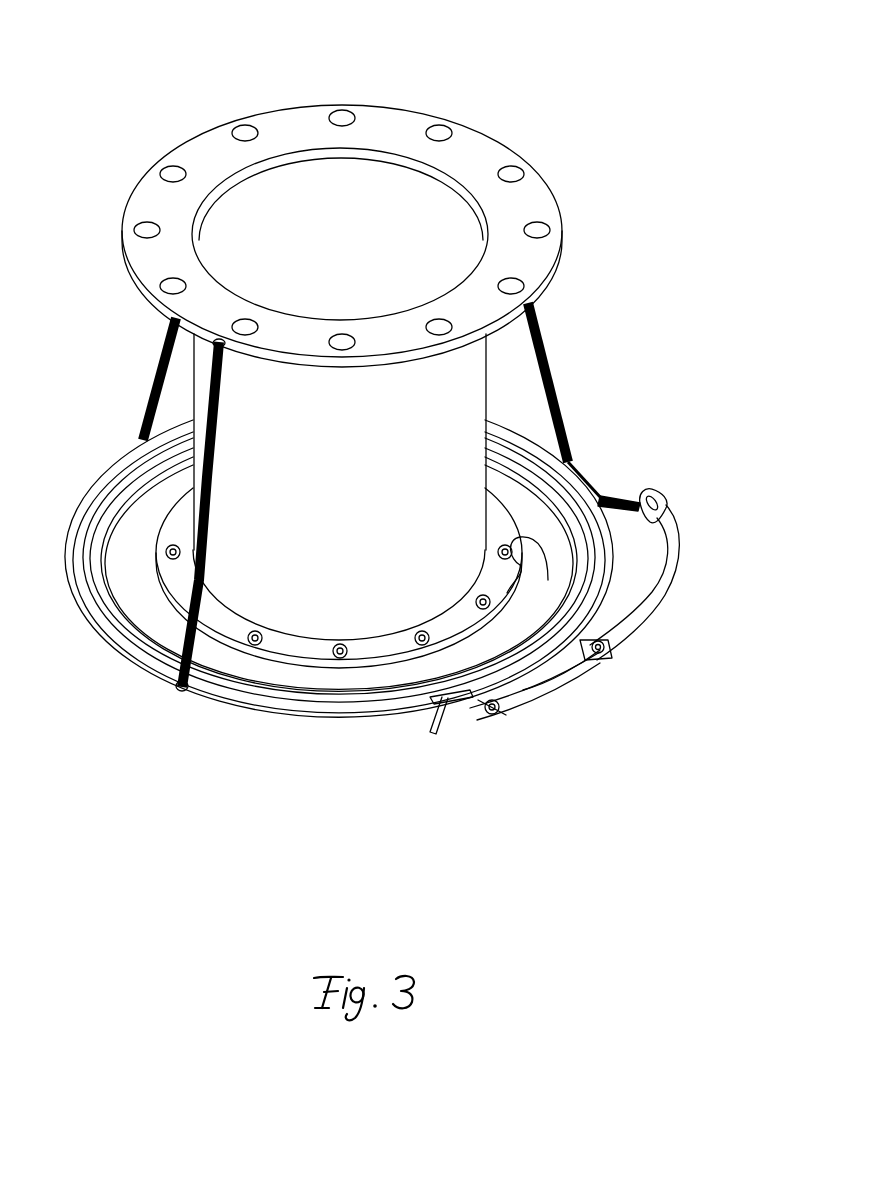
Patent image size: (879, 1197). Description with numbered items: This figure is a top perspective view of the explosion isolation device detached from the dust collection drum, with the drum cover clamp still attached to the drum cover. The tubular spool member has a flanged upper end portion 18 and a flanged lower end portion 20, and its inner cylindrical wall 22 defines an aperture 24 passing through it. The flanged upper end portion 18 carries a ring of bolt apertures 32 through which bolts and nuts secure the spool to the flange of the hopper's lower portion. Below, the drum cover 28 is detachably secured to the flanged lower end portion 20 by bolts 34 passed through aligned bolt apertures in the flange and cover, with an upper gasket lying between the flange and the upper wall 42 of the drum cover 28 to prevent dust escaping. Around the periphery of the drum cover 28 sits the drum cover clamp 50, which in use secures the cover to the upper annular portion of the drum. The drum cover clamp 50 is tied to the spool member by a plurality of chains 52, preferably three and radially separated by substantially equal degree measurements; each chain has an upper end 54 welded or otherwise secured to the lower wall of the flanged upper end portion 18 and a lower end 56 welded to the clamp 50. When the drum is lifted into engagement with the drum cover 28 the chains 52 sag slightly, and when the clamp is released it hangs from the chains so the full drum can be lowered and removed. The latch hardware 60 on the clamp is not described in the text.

The flanged upper end portion 18 is at (487, 158).
The flanged lower end portion 20 is at (303, 660).
The inner cylindrical wall 22 is at (290, 187).
The aperture 24 is at (353, 153).
The drum cover 28 is at (77, 587).
The bolt apertures 32 is at (436, 135).
The bolts 34 is at (483, 598).
The upper wall 42 is at (153, 635).
The drum cover clamp 50 is at (93, 485).
The chains 52 is at (162, 367).
The upper end 54 is at (235, 355).
The lower end 56 is at (177, 693).
The latch band 60 is at (667, 533).